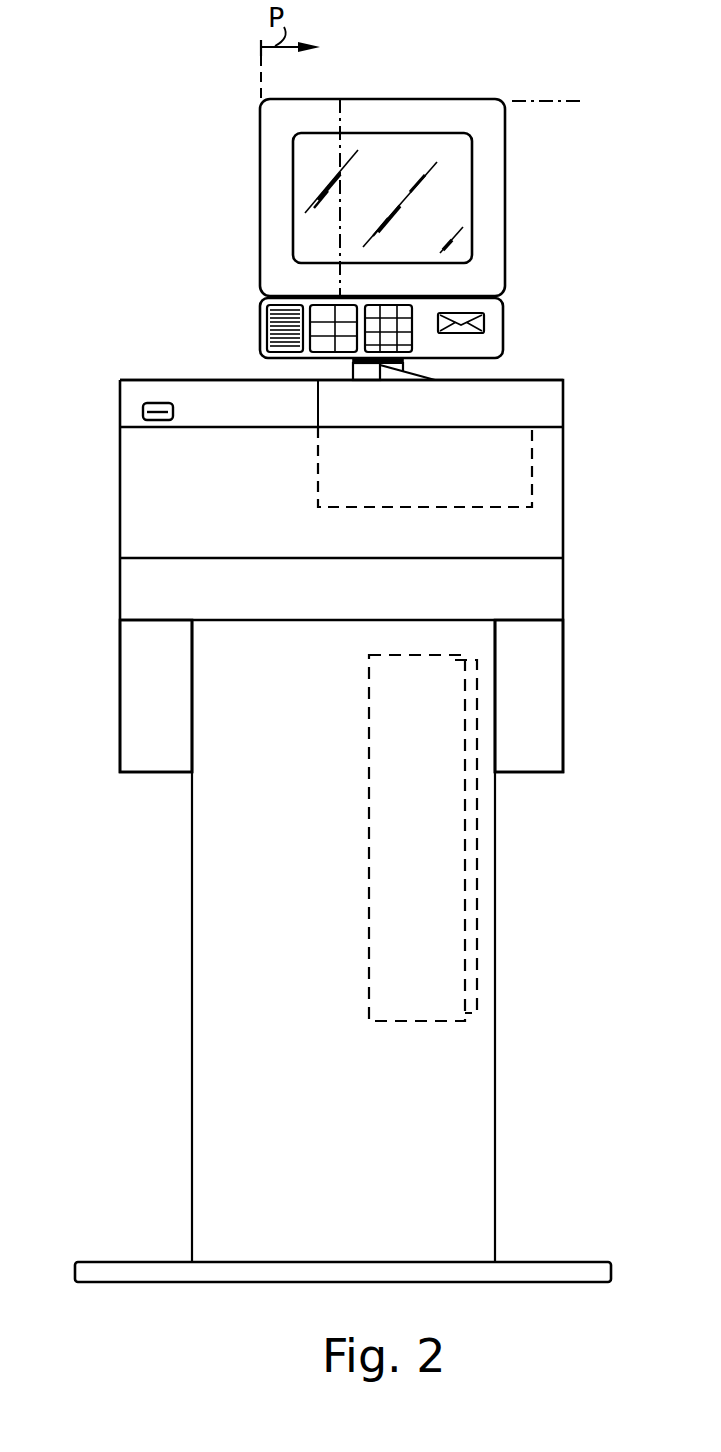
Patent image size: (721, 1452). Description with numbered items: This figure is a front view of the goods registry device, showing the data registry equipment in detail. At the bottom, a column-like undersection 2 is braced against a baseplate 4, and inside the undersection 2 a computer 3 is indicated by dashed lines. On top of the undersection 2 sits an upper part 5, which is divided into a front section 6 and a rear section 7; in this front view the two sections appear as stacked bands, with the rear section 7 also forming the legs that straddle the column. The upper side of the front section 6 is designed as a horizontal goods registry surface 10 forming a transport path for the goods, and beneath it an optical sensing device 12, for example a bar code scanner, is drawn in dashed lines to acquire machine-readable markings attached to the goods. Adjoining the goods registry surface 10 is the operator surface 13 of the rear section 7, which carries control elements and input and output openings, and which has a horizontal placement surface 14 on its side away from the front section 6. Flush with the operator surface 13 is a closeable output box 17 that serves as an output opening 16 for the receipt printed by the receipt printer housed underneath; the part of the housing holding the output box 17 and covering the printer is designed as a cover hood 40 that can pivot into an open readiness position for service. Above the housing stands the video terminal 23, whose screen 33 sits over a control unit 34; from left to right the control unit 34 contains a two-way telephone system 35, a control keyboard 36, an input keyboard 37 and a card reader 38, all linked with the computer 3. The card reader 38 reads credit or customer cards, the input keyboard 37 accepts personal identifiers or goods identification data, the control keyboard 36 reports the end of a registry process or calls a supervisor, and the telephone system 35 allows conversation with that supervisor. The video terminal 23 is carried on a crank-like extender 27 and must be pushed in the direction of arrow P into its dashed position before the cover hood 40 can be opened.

The undersection 2 is at (343, 941).
The computer 3 is at (478, 877).
The baseplate 4 is at (565, 1262).
The upper part 5 is at (585, 748).
The front section 6 is at (130, 588).
The rear section 7 is at (132, 680).
The goods registry surface 10 is at (513, 424).
The optical sensing device 12 is at (318, 492).
The operator surface 13 is at (550, 398).
The horizontal placement surface 14 is at (533, 378).
The output opening 16 is at (138, 406).
The output box 17 is at (150, 413).
The video terminal 23 is at (555, 120).
The crank-like extender 27 is at (368, 372).
The screen 33 is at (458, 178).
The control unit 34 is at (528, 331).
The two-way telephone system 35 is at (278, 323).
The control keyboard 36 is at (323, 316).
The input keyboard 37 is at (385, 318).
The card reader 38 is at (483, 322).
The cover hood 40 is at (244, 403).